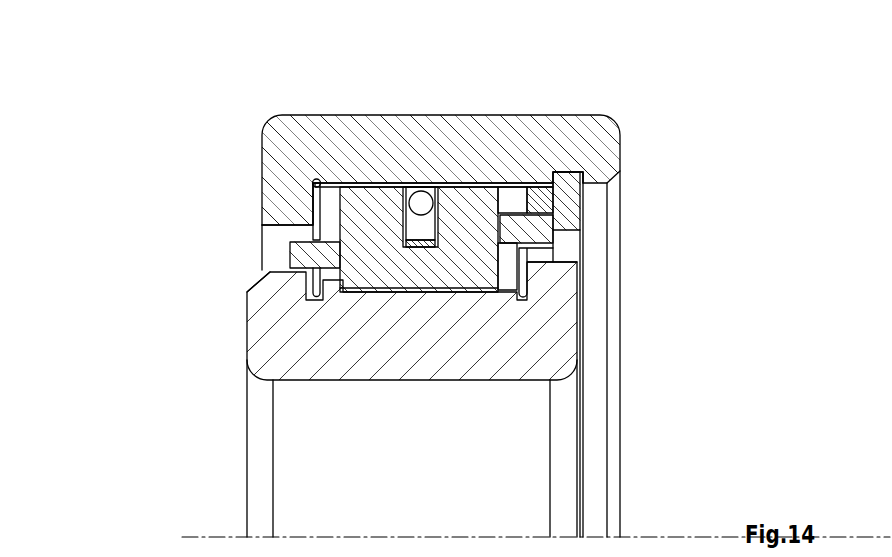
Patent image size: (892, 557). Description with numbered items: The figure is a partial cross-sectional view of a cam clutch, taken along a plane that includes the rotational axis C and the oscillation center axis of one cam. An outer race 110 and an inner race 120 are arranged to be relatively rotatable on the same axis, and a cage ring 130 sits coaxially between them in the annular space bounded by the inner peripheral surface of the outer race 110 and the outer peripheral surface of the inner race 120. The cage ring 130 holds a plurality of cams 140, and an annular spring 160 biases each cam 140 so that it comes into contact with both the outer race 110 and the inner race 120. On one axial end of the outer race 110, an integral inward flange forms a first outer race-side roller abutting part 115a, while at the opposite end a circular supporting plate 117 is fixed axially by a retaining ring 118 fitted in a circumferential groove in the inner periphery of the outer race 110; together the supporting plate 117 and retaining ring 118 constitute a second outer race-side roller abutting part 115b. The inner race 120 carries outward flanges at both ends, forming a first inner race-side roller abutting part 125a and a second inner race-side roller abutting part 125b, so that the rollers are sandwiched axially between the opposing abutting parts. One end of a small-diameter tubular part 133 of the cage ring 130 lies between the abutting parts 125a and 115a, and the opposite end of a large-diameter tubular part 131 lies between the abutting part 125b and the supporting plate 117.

The outer race 110 is at (270, 150).
The first outer race-side roller abutting part 115a is at (263, 230).
The second outer race-side roller abutting part 115b is at (635, 53).
The supporting plate 117 is at (540, 186).
The retaining ring 118 is at (571, 176).
The inner race 120 is at (558, 342).
The first inner race-side roller abutting part 125a is at (258, 283).
The second inner race-side roller abutting part 125b is at (558, 256).
The cage ring 130 is at (328, 236).
The large-diameter tubular part 131 is at (545, 223).
The small-diameter tubular part 133 is at (288, 258).
The cam 140 is at (368, 194).
The annular spring 160 is at (414, 183).
The rotational axis C is at (190, 537).